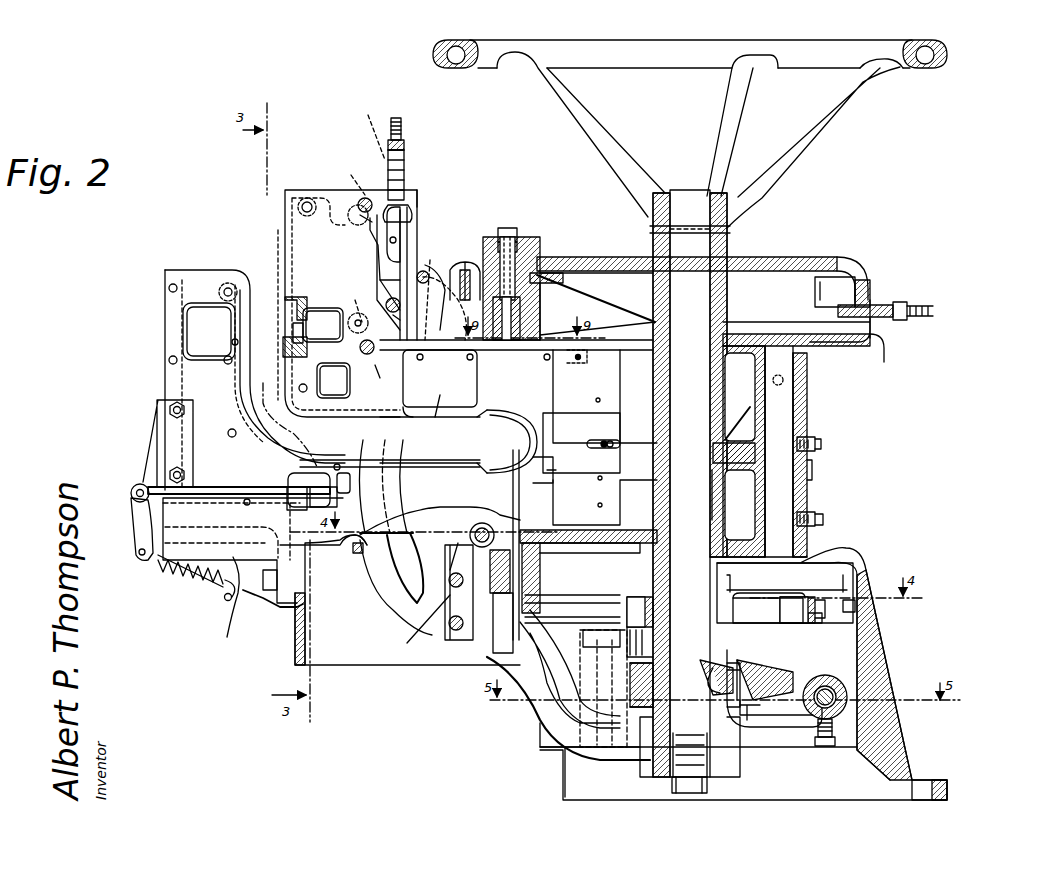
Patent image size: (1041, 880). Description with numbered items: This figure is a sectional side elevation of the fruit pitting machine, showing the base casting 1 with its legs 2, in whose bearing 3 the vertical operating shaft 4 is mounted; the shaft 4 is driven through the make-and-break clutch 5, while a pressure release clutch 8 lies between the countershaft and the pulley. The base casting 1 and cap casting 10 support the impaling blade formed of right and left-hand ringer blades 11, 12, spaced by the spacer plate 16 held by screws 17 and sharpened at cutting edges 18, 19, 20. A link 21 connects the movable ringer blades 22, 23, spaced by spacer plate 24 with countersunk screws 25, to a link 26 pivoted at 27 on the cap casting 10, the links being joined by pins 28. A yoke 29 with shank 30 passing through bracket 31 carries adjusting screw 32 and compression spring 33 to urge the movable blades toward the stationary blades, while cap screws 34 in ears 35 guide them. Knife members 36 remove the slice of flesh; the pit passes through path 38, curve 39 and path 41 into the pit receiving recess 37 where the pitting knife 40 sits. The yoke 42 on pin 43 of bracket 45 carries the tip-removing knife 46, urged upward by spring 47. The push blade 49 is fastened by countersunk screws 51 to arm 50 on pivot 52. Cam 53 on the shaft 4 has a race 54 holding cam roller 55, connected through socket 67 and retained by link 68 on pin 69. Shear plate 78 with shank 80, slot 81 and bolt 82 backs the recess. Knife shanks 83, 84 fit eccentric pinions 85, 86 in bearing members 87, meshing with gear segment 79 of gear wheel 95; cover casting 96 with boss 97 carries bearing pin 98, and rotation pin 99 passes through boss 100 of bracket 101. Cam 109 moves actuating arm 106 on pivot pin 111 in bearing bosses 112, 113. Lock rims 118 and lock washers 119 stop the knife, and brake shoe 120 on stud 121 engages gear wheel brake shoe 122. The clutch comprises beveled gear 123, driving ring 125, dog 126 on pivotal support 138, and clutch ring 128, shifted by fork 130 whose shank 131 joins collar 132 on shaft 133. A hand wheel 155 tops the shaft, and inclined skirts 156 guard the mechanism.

The base casting 1 is at (862, 555).
The legs 2 is at (905, 782).
The bearing 3 is at (720, 500).
The operating shaft 4 is at (682, 195).
The make-and-break clutch 5 is at (740, 672).
The pressure release clutch 8 is at (360, 455).
The cap casting 10 is at (880, 350).
The right-hand ringer blade 11 is at (440, 430).
The left-hand ringer blade 12 is at (612, 492).
The ringer blade spacer plate 16 is at (238, 392).
The screws 17 is at (230, 440).
The cutting edge 18 is at (190, 270).
The cutting edge 19 is at (345, 450).
The cutting edge 20 is at (442, 418).
The link 21 is at (440, 380).
The movable ringer blade 22 is at (300, 248).
The movable ringer blade 23 is at (298, 297).
The movable ringer blade spacer plate 24 is at (283, 352).
The countersunk screws 25 is at (303, 385).
The link 26 is at (412, 260).
The pivot 27 is at (430, 270).
The pins 28 is at (356, 300).
The yoke 29 is at (418, 222).
The shank 30 is at (405, 160).
The bracket 31 is at (405, 152).
The adjusting screw 32 is at (402, 130).
The compression spring 33 is at (371, 130).
The cap screws 34 is at (360, 348).
The ears 35 is at (382, 382).
The knife members 36 is at (343, 433).
The pit receiving recess 37 is at (487, 460).
The path 38 is at (268, 262).
The curve 39 is at (283, 440).
The pitting knife 40 is at (527, 440).
The path 41 is at (462, 437).
The yoke 42 is at (225, 486).
The pin 43 is at (132, 488).
The bracket 45 is at (262, 600).
The tip-removing knife 46 is at (290, 508).
The spring 47 is at (175, 578).
The push blade 49 is at (385, 587).
The arm 50 is at (460, 595).
The countersunk screws 51 is at (455, 633).
The pivot 52 is at (497, 524).
The cam 53 is at (790, 592).
The cam race 54 is at (780, 607).
The cam roller 55 is at (640, 597).
The socket 67 is at (542, 568).
The link 68 is at (590, 630).
The pin 69 is at (582, 652).
The shear plate 78 is at (565, 473).
The gear segment 79 is at (870, 283).
The shank 80 is at (580, 430).
The slot 81 is at (598, 440).
The bolt 82 is at (612, 442).
The shank 83 is at (512, 322).
The shank 84 is at (522, 530).
The eccentric pinion 85 is at (580, 300).
The eccentric pinion 86 is at (542, 598).
The bearing members 87 is at (522, 305).
The gear wheel 95 is at (825, 278).
The cover casting 96 is at (780, 265).
The boss 97 is at (538, 250).
The bearing pin 98 is at (518, 240).
The rotation pin 99 is at (505, 655).
The boss 100 is at (520, 705).
The bracket 101 is at (545, 710).
The actuating arm 106 is at (812, 475).
The cam 109 is at (760, 455).
The pivot pin 111 is at (780, 500).
The bearing boss 112 is at (822, 530).
The bearing boss 113 is at (808, 405).
The lock rims 118 is at (855, 270).
The lock washers 119 is at (468, 262).
The brake shoe 120 is at (875, 325).
The stud 121 is at (905, 300).
The gear wheel brake shoe 122 is at (872, 338).
The beveled gear 123 is at (795, 675).
The clutch driving ring 125 is at (660, 660).
The clutch dog 126 is at (745, 665).
The clutch ring 128 is at (600, 722).
The shifting fork 130 is at (755, 722).
The shank 131 is at (795, 725).
The collar 132 is at (833, 690).
The shaft 133 is at (835, 690).
The pivotal support 138 is at (745, 790).
The hand wheel 155 is at (850, 100).
The inclined skirts 156 is at (227, 637).